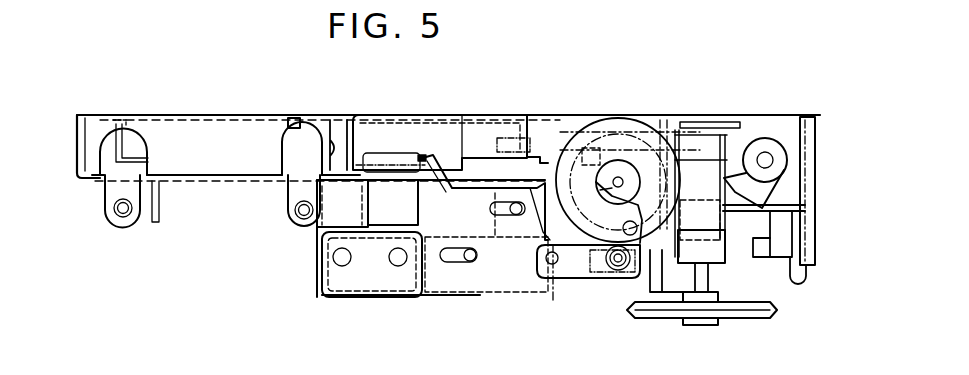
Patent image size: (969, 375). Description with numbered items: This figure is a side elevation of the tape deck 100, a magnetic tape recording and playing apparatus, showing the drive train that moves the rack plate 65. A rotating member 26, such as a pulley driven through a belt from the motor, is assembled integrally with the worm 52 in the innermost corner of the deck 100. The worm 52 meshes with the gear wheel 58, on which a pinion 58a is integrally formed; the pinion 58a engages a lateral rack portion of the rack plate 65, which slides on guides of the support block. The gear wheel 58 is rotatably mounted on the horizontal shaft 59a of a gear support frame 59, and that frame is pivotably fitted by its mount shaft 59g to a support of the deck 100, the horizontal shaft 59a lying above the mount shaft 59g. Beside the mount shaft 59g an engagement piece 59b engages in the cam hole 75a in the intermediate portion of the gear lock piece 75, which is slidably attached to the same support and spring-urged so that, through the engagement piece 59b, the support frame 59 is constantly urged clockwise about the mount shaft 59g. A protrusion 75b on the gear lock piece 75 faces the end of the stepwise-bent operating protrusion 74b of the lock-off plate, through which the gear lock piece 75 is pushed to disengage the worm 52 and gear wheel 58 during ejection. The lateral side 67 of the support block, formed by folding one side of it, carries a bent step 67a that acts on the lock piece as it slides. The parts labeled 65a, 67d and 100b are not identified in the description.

The rotating member 26 is at (740, 300).
The worm 52 is at (745, 170).
The gear wheel 58 is at (652, 118).
The pinion 58a is at (600, 172).
The gear support frame 59 is at (570, 280).
The horizontal shaft 59a is at (615, 192).
The engagement piece 59b is at (552, 265).
The mount shaft 59g is at (618, 270).
The rack plate 65 is at (490, 128).
The housing block 65a is at (658, 160).
The lateral side 67 is at (238, 128).
The bent step 67a is at (336, 128).
The arm tab 67d is at (295, 118).
The operating protrusion 74b is at (417, 168).
The gear lock piece 75 is at (458, 190).
The cam hole 75a is at (553, 300).
The protrusion 75b is at (422, 158).
The tape deck 100 is at (658, 300).
The carriage plate 100b is at (548, 292).